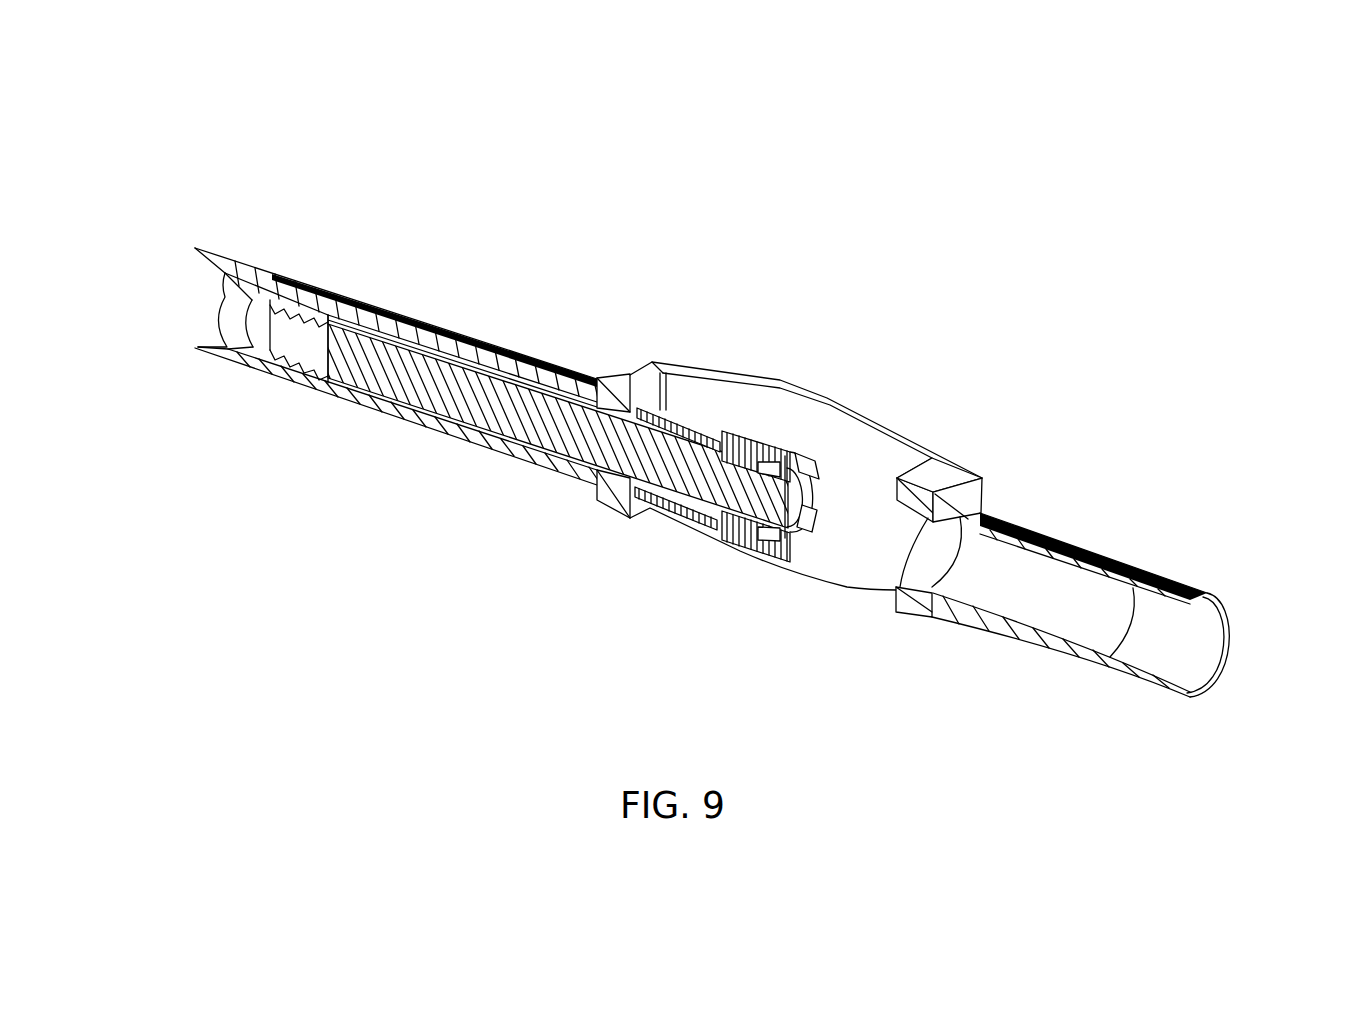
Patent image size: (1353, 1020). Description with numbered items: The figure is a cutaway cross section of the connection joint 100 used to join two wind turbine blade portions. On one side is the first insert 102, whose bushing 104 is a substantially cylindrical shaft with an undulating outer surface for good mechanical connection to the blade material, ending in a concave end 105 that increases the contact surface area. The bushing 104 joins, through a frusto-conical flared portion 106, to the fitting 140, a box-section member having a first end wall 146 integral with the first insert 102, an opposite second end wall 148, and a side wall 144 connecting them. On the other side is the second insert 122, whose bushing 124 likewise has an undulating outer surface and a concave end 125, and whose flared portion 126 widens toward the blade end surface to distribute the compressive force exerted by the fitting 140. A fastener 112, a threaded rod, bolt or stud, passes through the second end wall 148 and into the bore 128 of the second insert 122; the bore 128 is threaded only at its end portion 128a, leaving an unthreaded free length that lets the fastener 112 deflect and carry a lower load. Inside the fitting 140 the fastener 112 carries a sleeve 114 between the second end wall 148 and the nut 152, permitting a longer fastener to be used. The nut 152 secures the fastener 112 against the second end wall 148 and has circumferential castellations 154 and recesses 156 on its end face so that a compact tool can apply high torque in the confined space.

The connection joint 100 is at (617, 160).
The first insert 102 is at (1158, 497).
The bushing 104 is at (1055, 658).
The concave end 105 is at (1200, 648).
The flared portion 106 is at (905, 615).
The fastener 112 is at (483, 352).
The sleeve 114 is at (690, 412).
The second insert 122 is at (379, 235).
The bushing 124 is at (425, 428).
The concave end 125 is at (237, 318).
The flared portion 126 is at (592, 383).
The bore 128 is at (500, 445).
The threaded portion 128a is at (290, 365).
The fitting 140 is at (615, 642).
The side wall 144 is at (838, 395).
The first end wall 146 is at (962, 490).
The second end wall 148 is at (640, 378).
The nut 152 is at (775, 590).
The castellations 154 is at (812, 520).
The recesses 156 is at (790, 548).